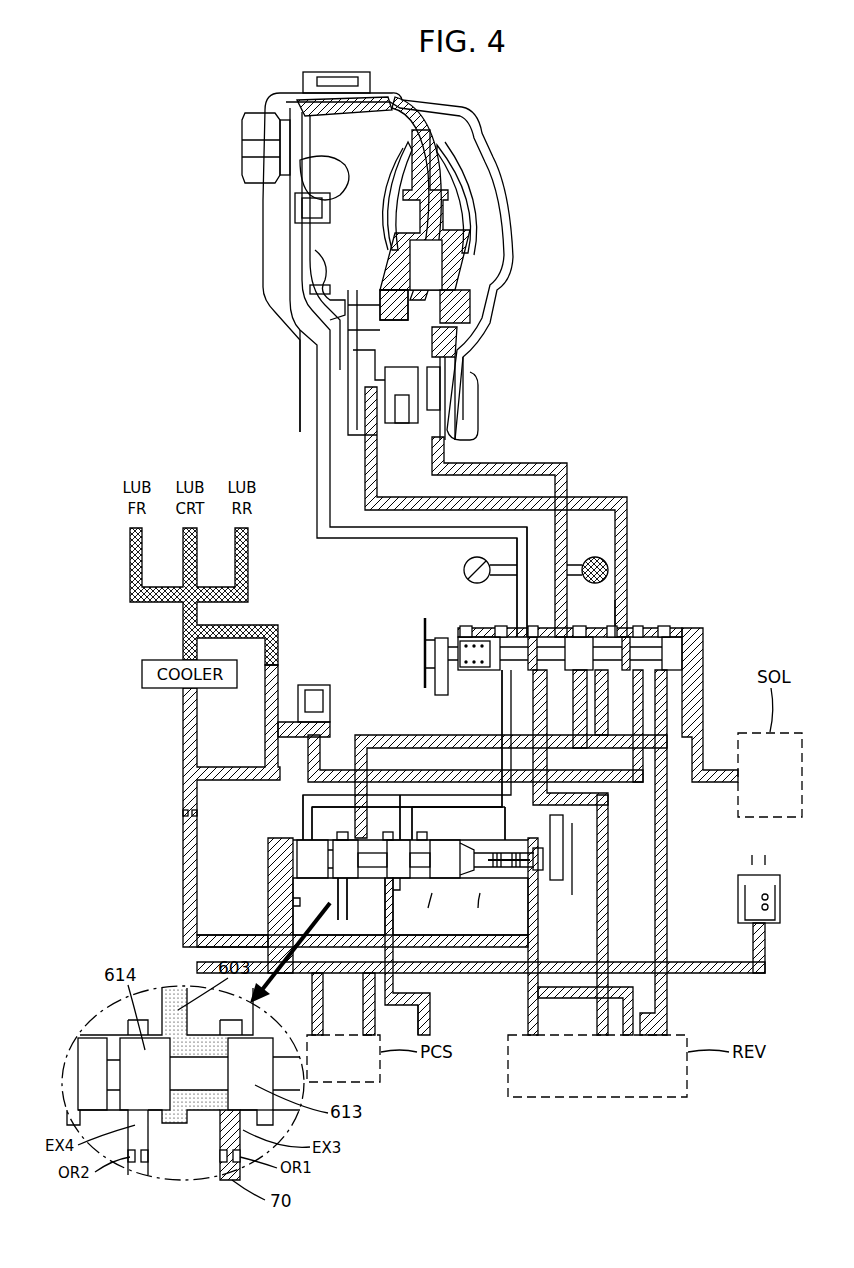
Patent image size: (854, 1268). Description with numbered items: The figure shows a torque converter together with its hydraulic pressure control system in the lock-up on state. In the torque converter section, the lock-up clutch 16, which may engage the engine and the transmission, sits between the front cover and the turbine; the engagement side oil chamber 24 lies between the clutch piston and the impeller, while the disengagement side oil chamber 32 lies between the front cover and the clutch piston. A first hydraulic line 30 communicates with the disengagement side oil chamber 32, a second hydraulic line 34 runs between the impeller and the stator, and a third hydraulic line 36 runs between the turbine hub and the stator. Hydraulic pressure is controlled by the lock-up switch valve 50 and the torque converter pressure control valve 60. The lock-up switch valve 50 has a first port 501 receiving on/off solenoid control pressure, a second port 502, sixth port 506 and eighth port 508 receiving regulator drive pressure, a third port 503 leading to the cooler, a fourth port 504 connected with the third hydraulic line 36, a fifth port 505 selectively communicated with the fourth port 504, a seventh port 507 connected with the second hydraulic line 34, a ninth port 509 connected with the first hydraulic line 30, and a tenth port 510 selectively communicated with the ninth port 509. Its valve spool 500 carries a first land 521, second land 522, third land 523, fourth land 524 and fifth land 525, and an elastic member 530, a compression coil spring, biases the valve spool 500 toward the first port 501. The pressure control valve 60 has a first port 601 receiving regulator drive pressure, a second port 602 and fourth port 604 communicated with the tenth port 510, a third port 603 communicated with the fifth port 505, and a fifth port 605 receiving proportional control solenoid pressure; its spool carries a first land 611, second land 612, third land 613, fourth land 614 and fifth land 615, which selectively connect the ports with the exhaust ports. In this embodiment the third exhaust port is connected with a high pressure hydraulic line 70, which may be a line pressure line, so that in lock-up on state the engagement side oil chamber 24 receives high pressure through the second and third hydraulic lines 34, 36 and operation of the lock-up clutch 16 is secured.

The lock-up clutch 16 is at (375, 124).
The engagement side oil chamber 24 is at (422, 190).
The first hydraulic line 30 is at (305, 378).
The disengagement side oil chamber 32 is at (292, 229).
The second hydraulic line 34 is at (512, 462).
The third hydraulic line 36 is at (628, 520).
The lock-up switch valve 50 is at (585, 781).
The valve spool 500 is at (684, 634).
The first port 501 is at (704, 676).
The second port 502 is at (660, 690).
The third port 503 is at (638, 710).
The fourth port 504 is at (620, 640).
The fifth port 505 is at (612, 716).
The sixth port 506 is at (578, 698).
The seventh port 507 is at (593, 578).
The eighth port 508 is at (538, 686).
The ninth port 509 is at (520, 636).
The tenth port 510 is at (496, 676).
The first land 521 is at (674, 645).
The second land 522 is at (627, 640).
The third land 523 is at (580, 648).
The fourth land 524 is at (532, 636).
The fifth land 525 is at (492, 636).
The elastic member 530 is at (424, 647).
The torque converter pressure control valve 60 is at (392, 852).
The first port 601 is at (562, 882).
The second port 602 is at (412, 836).
The third port 603 is at (355, 800).
The fourth port 604 is at (304, 834).
The fifth port 605 is at (282, 870).
The first land 611 is at (505, 852).
The second land 612 is at (444, 876).
The third land 613 is at (366, 880).
The fourth land 614 is at (318, 880).
The fifth land 615 is at (342, 882).
The high pressure hydraulic line 70 is at (432, 1015).